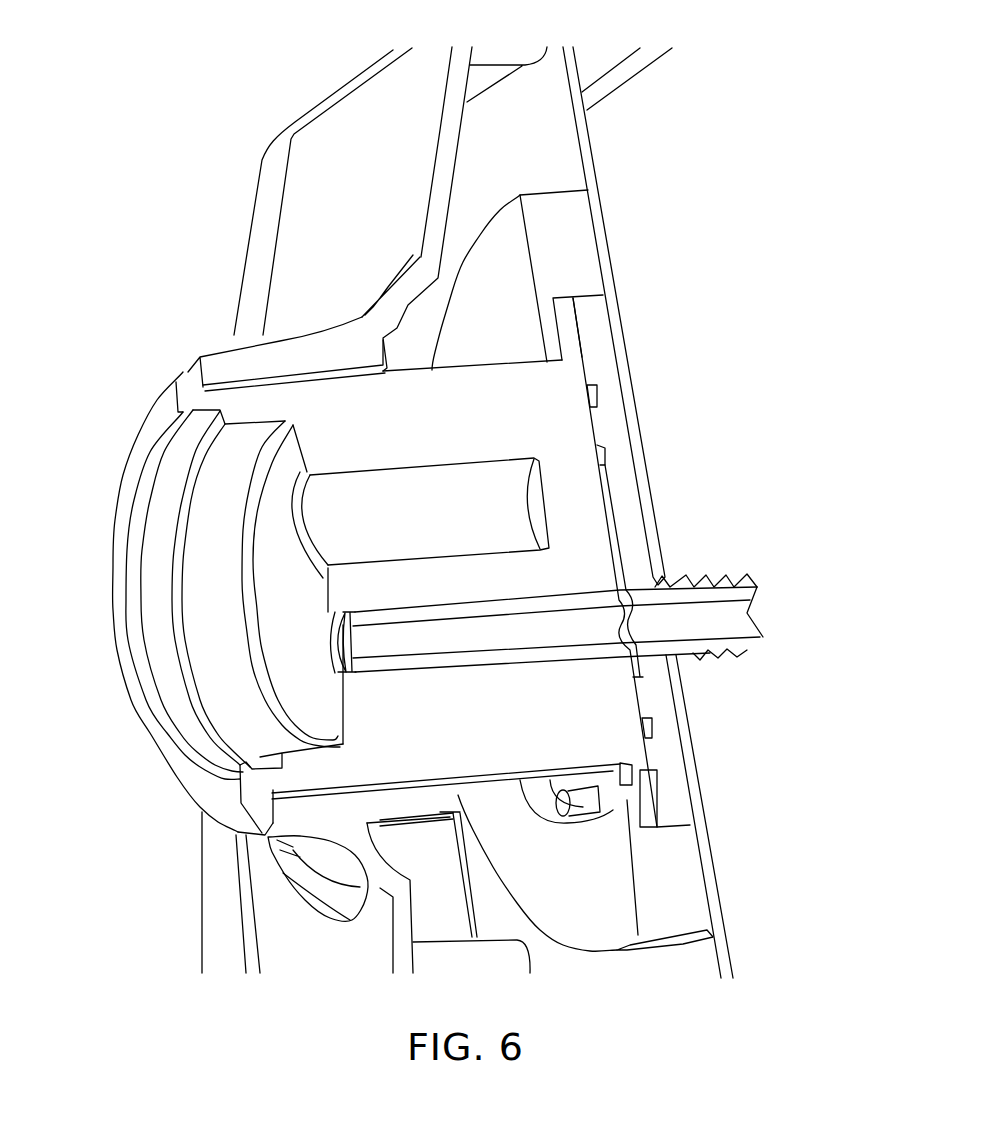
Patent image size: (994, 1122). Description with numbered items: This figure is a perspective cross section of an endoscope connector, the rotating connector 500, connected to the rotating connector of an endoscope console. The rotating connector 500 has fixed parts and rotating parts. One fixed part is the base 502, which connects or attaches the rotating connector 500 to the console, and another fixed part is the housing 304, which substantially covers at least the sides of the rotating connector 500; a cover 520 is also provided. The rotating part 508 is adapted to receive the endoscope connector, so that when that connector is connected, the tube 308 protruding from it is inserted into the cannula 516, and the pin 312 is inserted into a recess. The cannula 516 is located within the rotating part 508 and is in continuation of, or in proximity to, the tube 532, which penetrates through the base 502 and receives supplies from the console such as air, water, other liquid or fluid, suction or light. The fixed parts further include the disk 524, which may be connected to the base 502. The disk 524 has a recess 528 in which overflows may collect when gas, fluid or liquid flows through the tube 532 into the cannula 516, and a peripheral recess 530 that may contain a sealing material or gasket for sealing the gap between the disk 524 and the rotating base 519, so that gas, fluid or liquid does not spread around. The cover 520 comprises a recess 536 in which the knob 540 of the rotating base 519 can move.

The rotating connector 500 is at (134, 51).
The housing 304 is at (263, 160).
The base 502 is at (595, 152).
The cover 520 is at (573, 245).
The rotating part 508 is at (180, 378).
The disk 524 is at (607, 360).
The peripheral recess 530 is at (597, 393).
The recess 528 is at (605, 458).
The pin 312 is at (322, 517).
The tube 308 is at (330, 644).
The cannula 516 is at (334, 682).
The tube 532 is at (745, 615).
The knob 540 is at (630, 770).
The rotating base 519 is at (645, 798).
The recess 536 is at (628, 808).